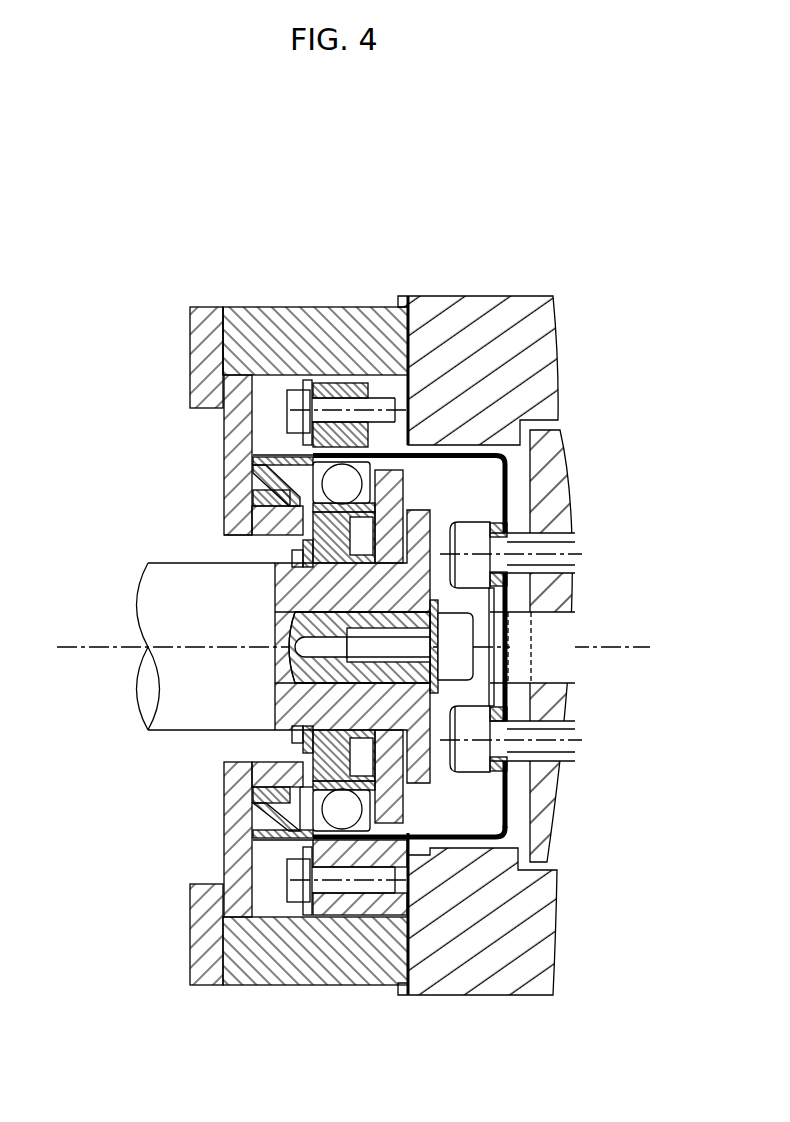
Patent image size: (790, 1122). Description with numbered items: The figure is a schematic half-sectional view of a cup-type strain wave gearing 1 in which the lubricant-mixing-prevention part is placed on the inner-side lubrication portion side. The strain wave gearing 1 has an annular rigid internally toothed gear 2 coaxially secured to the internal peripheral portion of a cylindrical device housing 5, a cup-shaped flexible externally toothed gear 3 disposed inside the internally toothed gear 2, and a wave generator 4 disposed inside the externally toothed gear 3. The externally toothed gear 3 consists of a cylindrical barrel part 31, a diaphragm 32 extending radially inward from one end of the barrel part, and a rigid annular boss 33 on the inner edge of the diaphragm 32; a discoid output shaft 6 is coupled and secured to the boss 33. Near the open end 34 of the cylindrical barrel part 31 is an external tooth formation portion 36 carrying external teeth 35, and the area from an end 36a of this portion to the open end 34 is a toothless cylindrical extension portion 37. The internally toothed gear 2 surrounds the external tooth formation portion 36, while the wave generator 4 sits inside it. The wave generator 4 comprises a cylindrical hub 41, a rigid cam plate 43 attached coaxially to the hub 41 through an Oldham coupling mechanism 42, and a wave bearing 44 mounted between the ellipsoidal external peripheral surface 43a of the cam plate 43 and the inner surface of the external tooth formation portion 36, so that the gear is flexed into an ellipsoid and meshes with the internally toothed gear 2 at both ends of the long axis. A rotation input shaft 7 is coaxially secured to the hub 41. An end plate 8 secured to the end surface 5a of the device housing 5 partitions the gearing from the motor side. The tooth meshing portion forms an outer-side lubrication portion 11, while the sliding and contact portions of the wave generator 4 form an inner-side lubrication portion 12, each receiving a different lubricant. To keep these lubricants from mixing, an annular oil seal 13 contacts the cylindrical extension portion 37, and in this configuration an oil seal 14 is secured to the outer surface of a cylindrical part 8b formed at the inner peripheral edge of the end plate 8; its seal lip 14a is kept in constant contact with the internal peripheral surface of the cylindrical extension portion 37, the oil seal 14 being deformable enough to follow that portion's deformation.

The strain wave gearing 1 is at (358, 236).
The rigid internally toothed gear 2 is at (336, 388).
The flexible externally toothed gear 3 is at (478, 651).
The wave generator 4 is at (486, 647).
The device housing 5 is at (292, 292).
The end surface 5a is at (223, 350).
The output shaft 6 is at (596, 518).
The rotation input shaft 7 is at (158, 550).
The end plate 8 is at (176, 358).
The cylindrical part 8b is at (250, 536).
The outer-side lubrication portion 11 is at (310, 423).
The inner-side lubrication portion 12 is at (240, 497).
The annular oil seal 13 is at (226, 876).
The oil seal 14 is at (285, 478).
The seal lip 14a is at (297, 460).
The cylindrical barrel part 31 is at (449, 848).
The diaphragm 32 is at (510, 803).
The boss 33 is at (510, 777).
The open end 34 is at (300, 447).
The external teeth 35 is at (323, 897).
The external tooth formation portion 36 is at (327, 939).
The end of the external tooth formation portion 36a is at (310, 812).
The cylindrical extension portion 37 is at (300, 452).
The hub 41 is at (560, 697).
The Oldham coupling mechanism 42 is at (405, 798).
The rigid cam plate 43 is at (303, 765).
The ellipsoidal external peripheral surface 43a is at (290, 795).
The wave bearing 44 is at (293, 812).